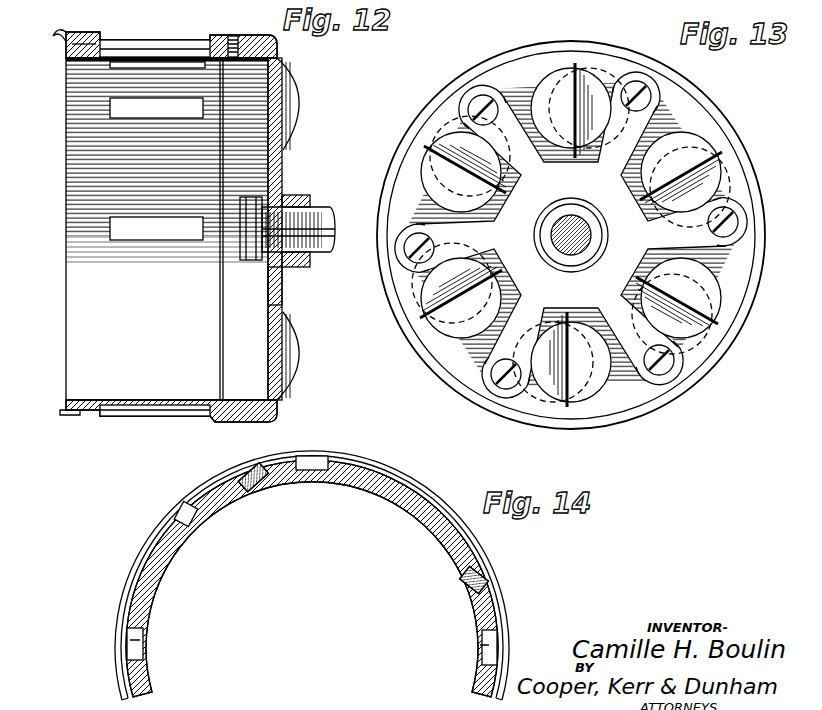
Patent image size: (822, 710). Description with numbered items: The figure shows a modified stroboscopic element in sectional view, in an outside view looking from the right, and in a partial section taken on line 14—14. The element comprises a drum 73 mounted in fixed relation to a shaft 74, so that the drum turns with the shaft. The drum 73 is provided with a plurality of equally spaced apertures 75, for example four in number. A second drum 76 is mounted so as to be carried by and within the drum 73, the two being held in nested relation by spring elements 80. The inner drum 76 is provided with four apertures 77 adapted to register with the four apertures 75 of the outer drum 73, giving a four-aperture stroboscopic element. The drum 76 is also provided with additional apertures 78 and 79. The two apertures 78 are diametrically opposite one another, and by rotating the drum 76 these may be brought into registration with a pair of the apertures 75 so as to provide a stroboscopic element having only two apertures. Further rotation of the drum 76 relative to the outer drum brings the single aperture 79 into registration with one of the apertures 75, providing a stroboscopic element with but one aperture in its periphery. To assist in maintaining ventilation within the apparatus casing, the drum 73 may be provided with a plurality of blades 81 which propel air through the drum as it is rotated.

In FIG. 12, the section line 14— 14 is at (195, 2).
In FIG. 12, the drum 73 is at (280, 54).
In FIG. 13, the drum 73 is at (394, 183).
In FIG. 14, the drum 73 is at (410, 476).
In FIG. 12, the shaft 74 is at (320, 217).
In FIG. 13, the shaft 74 is at (591, 229).
In FIG. 12, the apertures 75 is at (170, 45).
In FIG. 14, the apertures 75 is at (307, 463).
In FIG. 12, the drum 76 is at (66, 72).
In FIG. 14, the drum 76 is at (456, 552).
In FIG. 12, the apertures 77 is at (123, 47).
In FIG. 14, the apertures 77 is at (307, 462).
In FIG. 12, the apertures 78 is at (198, 55).
In FIG. 14, the apertures 78 is at (258, 484).
In FIG. 12, the aperture 79 is at (173, 105).
In FIG. 14, the aperture 79 is at (189, 525).
In FIG. 12, the spring elements 80 is at (61, 40).
In FIG. 14, the spring elements 80 is at (468, 579).
In FIG. 12, the blades 81 is at (300, 108).
In FIG. 13, the blades 81 is at (593, 80).